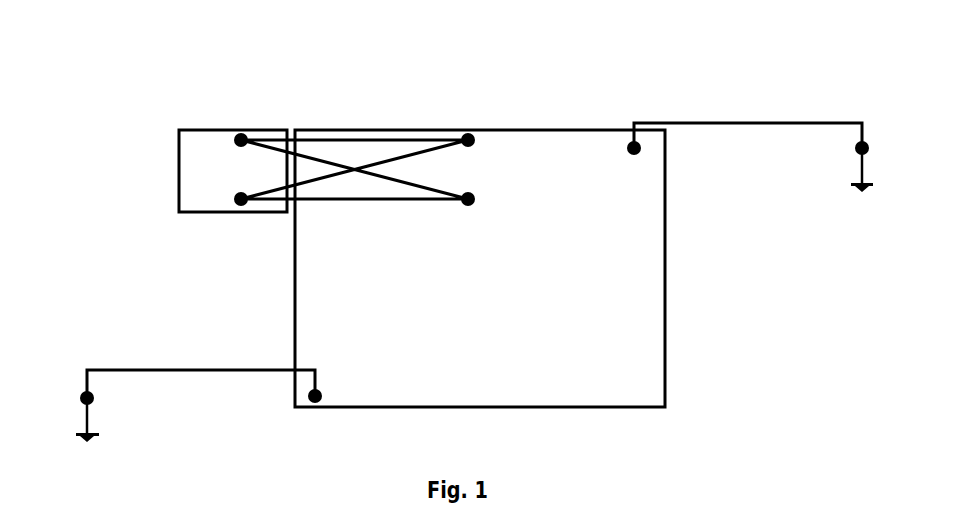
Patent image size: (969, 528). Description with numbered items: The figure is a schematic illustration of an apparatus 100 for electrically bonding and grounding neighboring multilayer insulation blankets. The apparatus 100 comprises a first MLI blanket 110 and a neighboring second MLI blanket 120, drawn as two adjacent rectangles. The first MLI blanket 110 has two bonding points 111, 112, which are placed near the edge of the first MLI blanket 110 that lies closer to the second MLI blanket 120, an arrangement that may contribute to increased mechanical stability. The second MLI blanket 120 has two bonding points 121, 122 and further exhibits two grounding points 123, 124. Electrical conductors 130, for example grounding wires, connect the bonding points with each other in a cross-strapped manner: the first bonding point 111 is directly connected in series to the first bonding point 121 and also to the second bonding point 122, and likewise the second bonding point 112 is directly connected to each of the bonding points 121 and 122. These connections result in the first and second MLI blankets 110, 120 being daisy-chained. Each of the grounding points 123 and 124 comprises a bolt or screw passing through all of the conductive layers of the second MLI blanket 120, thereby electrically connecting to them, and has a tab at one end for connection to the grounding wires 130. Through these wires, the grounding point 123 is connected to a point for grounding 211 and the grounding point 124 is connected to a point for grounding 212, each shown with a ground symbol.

The apparatus 100 is at (125, 21).
The first MLI blanket 110 is at (179, 176).
The first bonding point of first MLI blanket 111 is at (239, 134).
The second bonding point of first MLI blanket 112 is at (235, 204).
The second MLI blanket 120 is at (665, 348).
The first bonding point of second MLI blanket 121 is at (468, 134).
The second bonding point of second MLI blanket 122 is at (470, 198).
The grounding point 123 is at (321, 398).
The grounding point 124 is at (641, 145).
The electrical conductors 130 is at (343, 142).
The point for grounding 211 is at (83, 393).
The point for grounding 212 is at (855, 146).